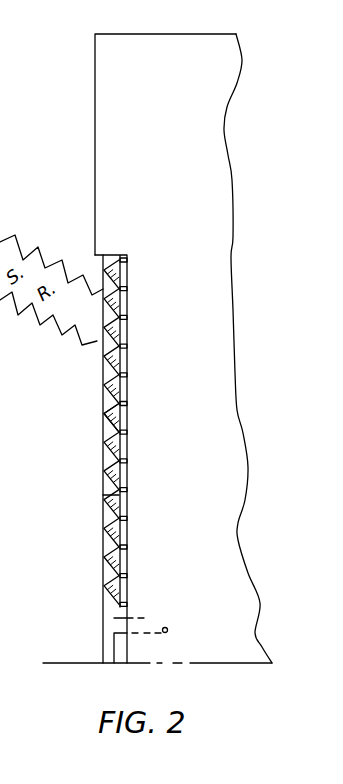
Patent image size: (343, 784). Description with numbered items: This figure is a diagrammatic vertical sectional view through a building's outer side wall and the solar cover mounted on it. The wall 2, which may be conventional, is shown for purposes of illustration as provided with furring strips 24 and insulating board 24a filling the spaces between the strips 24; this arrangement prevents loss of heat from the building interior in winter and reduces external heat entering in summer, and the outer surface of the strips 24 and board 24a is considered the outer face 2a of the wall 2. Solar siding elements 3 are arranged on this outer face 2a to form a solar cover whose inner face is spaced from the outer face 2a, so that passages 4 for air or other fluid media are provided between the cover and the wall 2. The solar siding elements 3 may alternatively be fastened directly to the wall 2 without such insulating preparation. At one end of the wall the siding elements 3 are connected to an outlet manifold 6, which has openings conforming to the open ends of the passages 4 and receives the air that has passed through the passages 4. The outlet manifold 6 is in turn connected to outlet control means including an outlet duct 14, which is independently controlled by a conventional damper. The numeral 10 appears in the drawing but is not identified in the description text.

The outer side wall 2 is at (158, 280).
The outer face 2a is at (123, 336).
The furring strips 24 is at (127, 348).
The insulating board 24a is at (125, 388).
The passages 4 is at (115, 432).
The solar siding elements 3 is at (110, 442).
The outlet manifold 6 is at (104, 495).
The ground line 10 is at (136, 599).
The outlet duct 14 is at (150, 617).